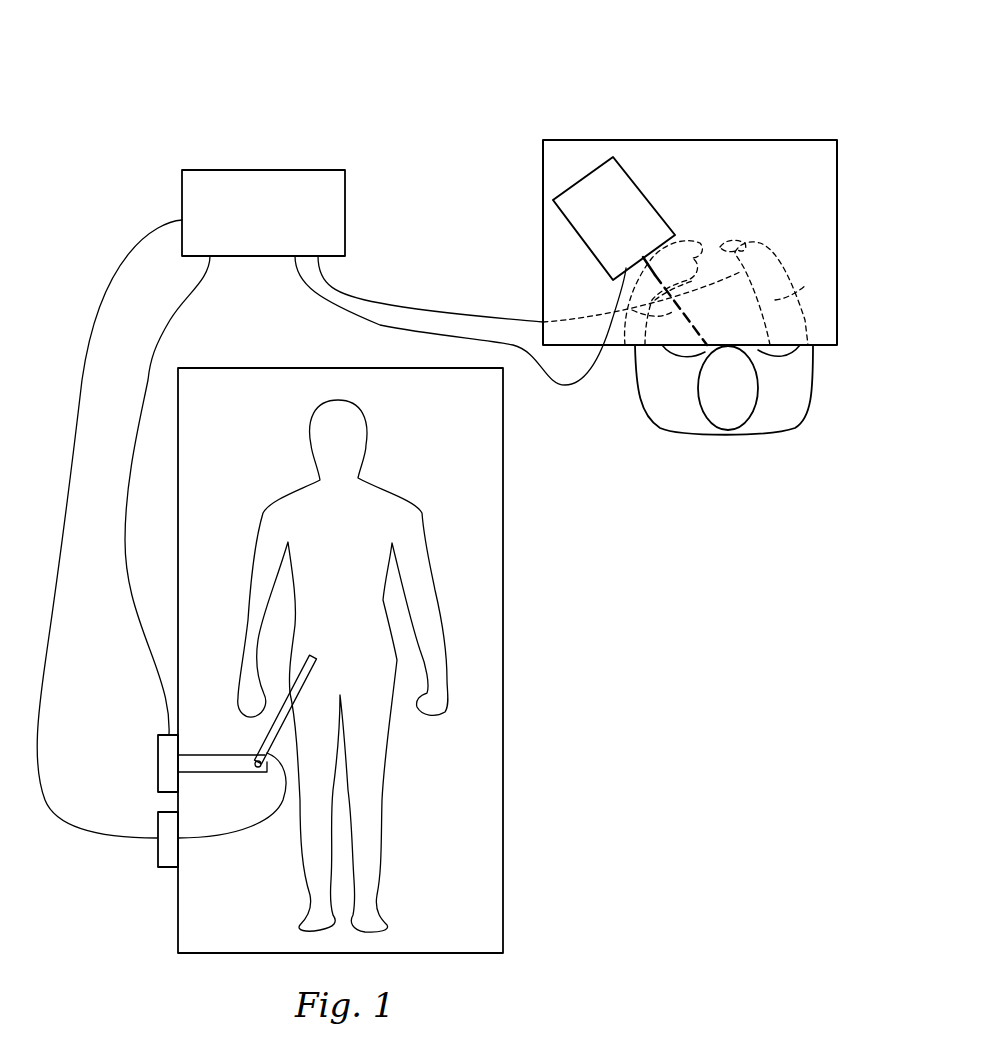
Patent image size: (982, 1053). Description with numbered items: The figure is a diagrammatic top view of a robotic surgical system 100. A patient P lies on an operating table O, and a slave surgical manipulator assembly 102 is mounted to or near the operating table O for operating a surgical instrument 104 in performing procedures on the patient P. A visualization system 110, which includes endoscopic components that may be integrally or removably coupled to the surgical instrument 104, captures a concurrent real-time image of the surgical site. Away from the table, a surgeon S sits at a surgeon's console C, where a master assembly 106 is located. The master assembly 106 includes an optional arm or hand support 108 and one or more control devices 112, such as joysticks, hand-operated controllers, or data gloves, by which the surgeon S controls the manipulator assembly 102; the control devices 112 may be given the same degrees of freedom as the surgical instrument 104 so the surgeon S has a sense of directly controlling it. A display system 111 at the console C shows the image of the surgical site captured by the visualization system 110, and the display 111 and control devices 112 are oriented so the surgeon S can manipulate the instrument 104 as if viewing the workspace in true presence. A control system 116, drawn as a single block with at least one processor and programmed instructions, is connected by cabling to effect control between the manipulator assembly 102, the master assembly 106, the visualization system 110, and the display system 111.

The robotic surgical system 100 is at (348, 64).
The slave surgical manipulator assembly 102 is at (149, 781).
The surgical instrument 104 is at (320, 672).
The master assembly 106 is at (665, 116).
The arm or hand support 108 is at (793, 147).
The visualization system 110 is at (156, 853).
The display system 111 is at (590, 185).
The control device 112 is at (733, 248).
The control system 116 is at (254, 178).
The surgeon's console C is at (727, 147).
The operating table O is at (505, 660).
The patient P is at (385, 497).
The surgeon S is at (765, 437).